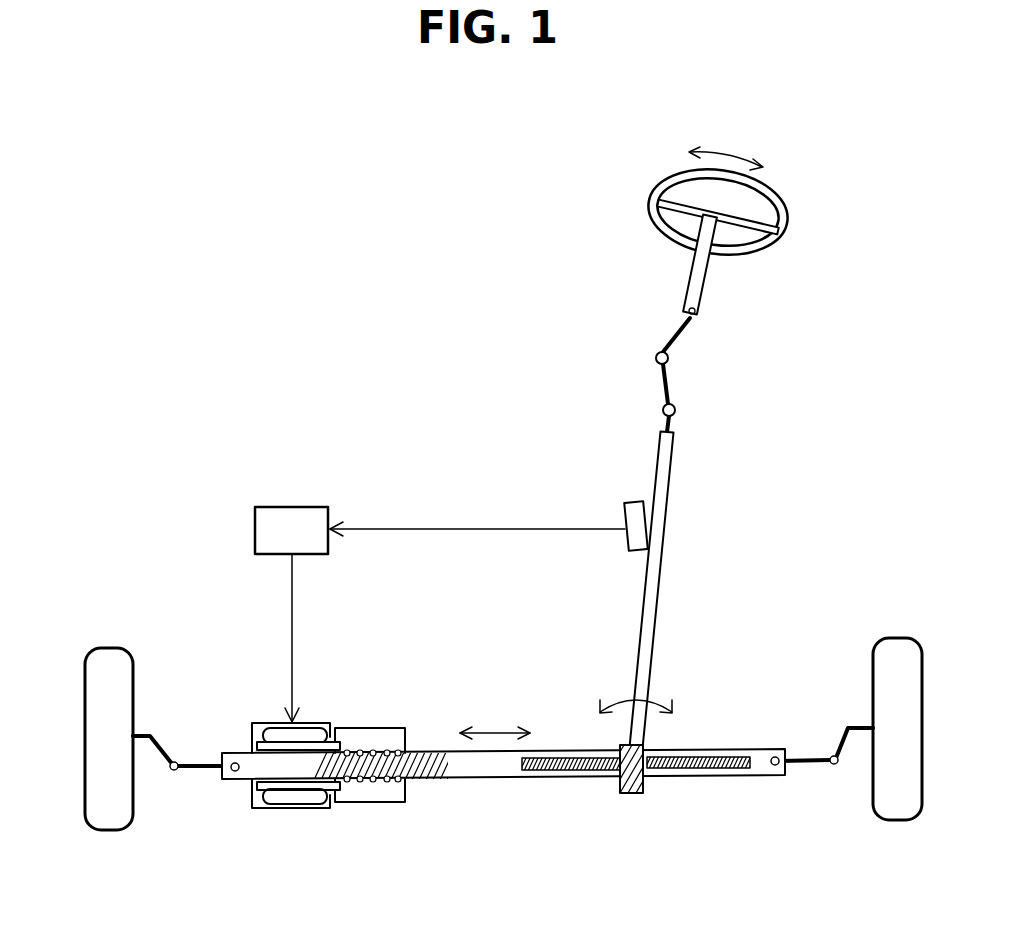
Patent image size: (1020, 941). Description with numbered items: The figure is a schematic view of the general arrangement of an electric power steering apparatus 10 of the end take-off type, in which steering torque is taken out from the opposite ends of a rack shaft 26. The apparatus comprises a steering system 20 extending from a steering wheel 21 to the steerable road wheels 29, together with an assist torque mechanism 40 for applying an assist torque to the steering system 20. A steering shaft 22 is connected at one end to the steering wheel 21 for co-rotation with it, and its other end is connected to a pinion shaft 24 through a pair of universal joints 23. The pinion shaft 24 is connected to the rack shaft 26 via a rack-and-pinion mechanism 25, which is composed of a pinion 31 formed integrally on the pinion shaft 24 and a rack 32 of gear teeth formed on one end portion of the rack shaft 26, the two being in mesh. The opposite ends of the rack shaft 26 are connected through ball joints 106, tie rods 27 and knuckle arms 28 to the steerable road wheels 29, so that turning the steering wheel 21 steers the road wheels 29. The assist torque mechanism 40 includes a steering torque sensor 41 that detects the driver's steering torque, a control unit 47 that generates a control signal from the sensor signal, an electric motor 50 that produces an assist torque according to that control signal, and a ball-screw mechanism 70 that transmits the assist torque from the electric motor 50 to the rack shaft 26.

The electric power steering apparatus 10 is at (307, 176).
The steering system 20 is at (796, 152).
The steering wheel 21 is at (778, 207).
The steering shaft 22 is at (702, 277).
The universal joints 23 is at (668, 358).
The pinion shaft 24 is at (655, 587).
The rack-and-pinion mechanism 25 is at (645, 851).
The rack shaft 26 is at (473, 766).
The tie rods 27 is at (193, 775).
The knuckle arms 28 is at (150, 730).
The steerable road wheels 29 is at (105, 657).
The pinion 31 is at (625, 794).
The rack 32 is at (568, 772).
The assist torque mechanism 40 is at (366, 460).
The steering torque sensor 41 is at (628, 510).
The control unit 47 is at (268, 530).
The electric motor 50 is at (292, 810).
The ball-screw mechanism 70 is at (372, 804).
The ball joints 106 is at (235, 773).